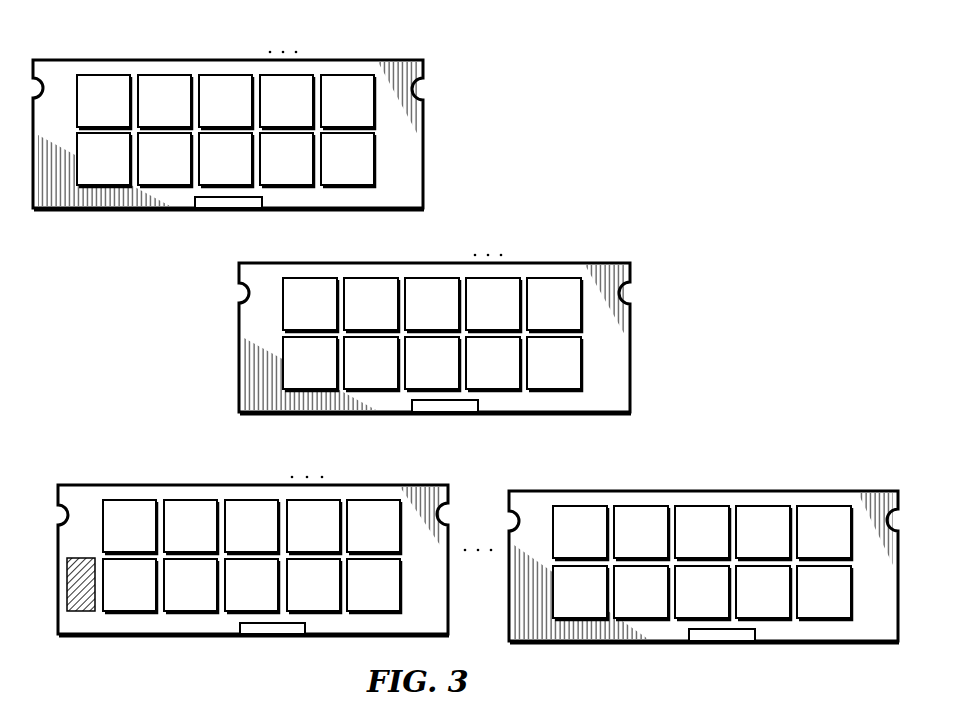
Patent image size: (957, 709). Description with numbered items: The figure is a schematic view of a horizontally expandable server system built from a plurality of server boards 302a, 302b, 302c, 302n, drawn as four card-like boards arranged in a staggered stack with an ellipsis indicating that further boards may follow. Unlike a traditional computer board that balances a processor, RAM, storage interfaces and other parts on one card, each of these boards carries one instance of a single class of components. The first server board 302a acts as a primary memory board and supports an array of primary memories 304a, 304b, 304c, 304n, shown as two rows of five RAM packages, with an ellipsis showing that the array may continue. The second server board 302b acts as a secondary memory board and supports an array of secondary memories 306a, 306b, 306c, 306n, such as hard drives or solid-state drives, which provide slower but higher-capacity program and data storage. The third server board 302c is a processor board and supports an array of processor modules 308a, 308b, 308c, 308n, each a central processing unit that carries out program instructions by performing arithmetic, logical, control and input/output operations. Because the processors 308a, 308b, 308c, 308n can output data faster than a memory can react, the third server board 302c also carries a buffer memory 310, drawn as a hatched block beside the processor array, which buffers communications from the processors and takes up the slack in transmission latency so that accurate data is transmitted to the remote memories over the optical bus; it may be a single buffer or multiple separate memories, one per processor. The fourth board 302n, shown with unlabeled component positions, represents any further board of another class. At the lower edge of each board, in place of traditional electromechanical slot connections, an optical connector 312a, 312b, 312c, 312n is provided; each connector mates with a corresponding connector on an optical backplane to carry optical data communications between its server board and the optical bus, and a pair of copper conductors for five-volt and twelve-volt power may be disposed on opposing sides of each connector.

The first server board 302a is at (452, 110).
The second server board 302b is at (655, 302).
The third server board 302c is at (375, 484).
The server board 302n is at (753, 490).
The primary memory 304a is at (100, 75).
The primary memory 304b is at (161, 75).
The primary memory 304c is at (221, 75).
The primary memory 304n is at (376, 160).
The secondary memory 306a is at (313, 278).
The secondary memory 306b is at (372, 278).
The secondary memory 306c is at (433, 278).
The secondary memory 306n is at (582, 362).
The processor module 308a is at (131, 500).
The processor module 308b is at (192, 500).
The processor module 308c is at (253, 500).
The processor module 308n is at (401, 583).
The buffer memory 310 is at (67, 586).
The optical connector 312a is at (207, 210).
The optical connector 312b is at (467, 414).
The optical connector 312c is at (268, 637).
The optical connector 312n is at (726, 642).